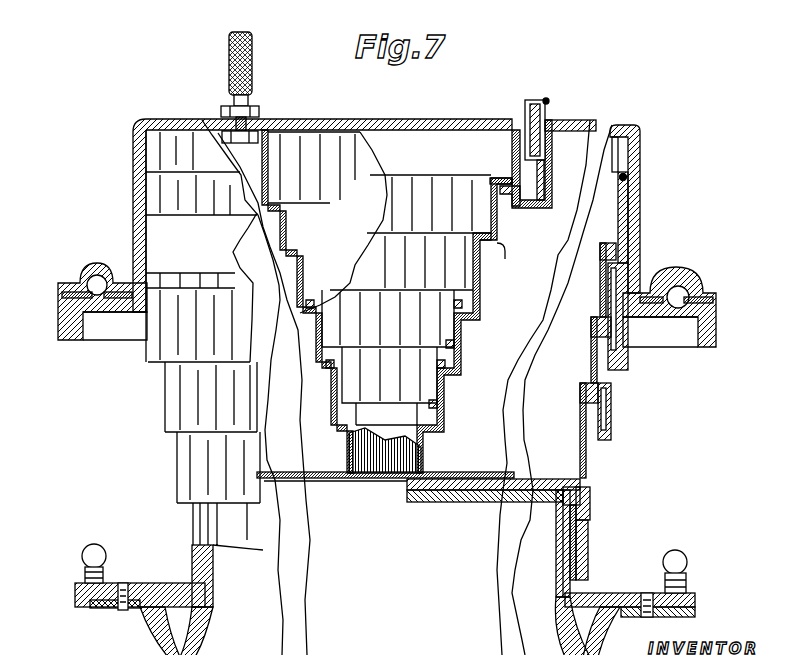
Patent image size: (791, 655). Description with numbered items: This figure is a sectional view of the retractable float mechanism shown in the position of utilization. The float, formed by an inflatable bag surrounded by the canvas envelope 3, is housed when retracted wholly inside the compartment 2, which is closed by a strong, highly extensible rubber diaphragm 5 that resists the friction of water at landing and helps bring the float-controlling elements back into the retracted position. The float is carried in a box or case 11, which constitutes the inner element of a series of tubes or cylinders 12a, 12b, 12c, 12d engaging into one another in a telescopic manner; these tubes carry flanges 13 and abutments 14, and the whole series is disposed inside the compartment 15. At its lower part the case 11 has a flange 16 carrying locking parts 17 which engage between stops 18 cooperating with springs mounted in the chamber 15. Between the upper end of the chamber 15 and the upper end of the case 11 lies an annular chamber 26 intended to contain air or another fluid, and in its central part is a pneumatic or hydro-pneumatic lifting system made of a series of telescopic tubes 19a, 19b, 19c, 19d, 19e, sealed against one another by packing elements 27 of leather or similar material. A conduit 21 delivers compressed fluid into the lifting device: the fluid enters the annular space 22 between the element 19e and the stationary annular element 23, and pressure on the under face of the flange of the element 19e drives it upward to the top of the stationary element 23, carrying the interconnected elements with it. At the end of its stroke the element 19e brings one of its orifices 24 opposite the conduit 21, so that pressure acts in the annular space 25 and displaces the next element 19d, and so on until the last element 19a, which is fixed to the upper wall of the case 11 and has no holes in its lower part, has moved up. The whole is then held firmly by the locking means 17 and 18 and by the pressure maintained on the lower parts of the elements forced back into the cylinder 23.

The compartment 2 is at (561, 547).
The canvas envelope 3 is at (565, 577).
The rubber diaphragm 5 is at (595, 643).
The case 11 is at (515, 470).
The telescopic tube 12a is at (590, 540).
The telescopic tube 12b is at (601, 474).
The telescopic tube 12c is at (613, 415).
The telescopic tube 12d is at (628, 335).
The flange 13 is at (602, 255).
The abutment 14 is at (603, 280).
The compartment 15 is at (636, 190).
The flange 16 is at (606, 593).
The locking part 17 is at (673, 557).
The stop 18 is at (670, 300).
The telescopic tube 19a is at (431, 450).
The telescopic tube 19b is at (445, 392).
The telescopic tube 19c is at (464, 337).
The telescopic tube 19d is at (472, 272).
The telescopic tube 19e is at (490, 180).
The conduit 21 is at (546, 106).
The annular space 22 is at (503, 208).
The stationary annular element 23 is at (513, 165).
The orifice 24 is at (504, 252).
The annular space 25 is at (478, 236).
The annular chamber 26 is at (600, 200).
The packing element 27 is at (451, 347).